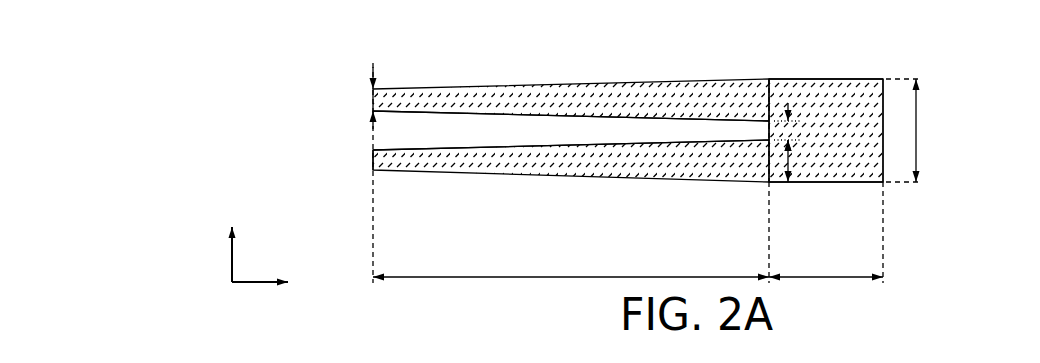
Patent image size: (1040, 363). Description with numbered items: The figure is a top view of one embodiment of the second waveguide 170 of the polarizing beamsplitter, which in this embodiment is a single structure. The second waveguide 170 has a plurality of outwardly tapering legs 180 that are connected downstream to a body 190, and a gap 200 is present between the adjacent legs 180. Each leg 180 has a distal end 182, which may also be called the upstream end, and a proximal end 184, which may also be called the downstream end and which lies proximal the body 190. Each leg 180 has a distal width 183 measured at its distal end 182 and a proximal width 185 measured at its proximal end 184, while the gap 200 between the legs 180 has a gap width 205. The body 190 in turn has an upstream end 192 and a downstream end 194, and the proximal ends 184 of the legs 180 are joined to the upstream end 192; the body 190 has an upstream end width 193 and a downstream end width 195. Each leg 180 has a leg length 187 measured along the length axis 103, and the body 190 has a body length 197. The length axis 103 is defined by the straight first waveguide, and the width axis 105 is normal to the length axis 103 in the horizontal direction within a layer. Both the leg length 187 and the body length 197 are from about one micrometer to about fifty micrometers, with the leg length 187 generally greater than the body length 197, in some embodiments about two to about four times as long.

The second waveguide 170 is at (249, 41).
The legs 180 is at (367, 99).
The distal end 182 is at (372, 171).
The distal width 183 is at (374, 85).
The proximal end 184 is at (742, 184).
The proximal width 185 is at (810, 161).
The leg length 187 is at (571, 265).
The body 190 is at (825, 78).
The upstream end 192 is at (772, 184).
The upstream end width 193 is at (769, 78).
The downstream end 194 is at (877, 184).
The downstream end width 195 is at (922, 130).
The body length 197 is at (826, 265).
The gap 200 is at (548, 132).
The gap width 205 is at (803, 126).
The length axis 103 is at (280, 283).
The width axis 105 is at (231, 241).